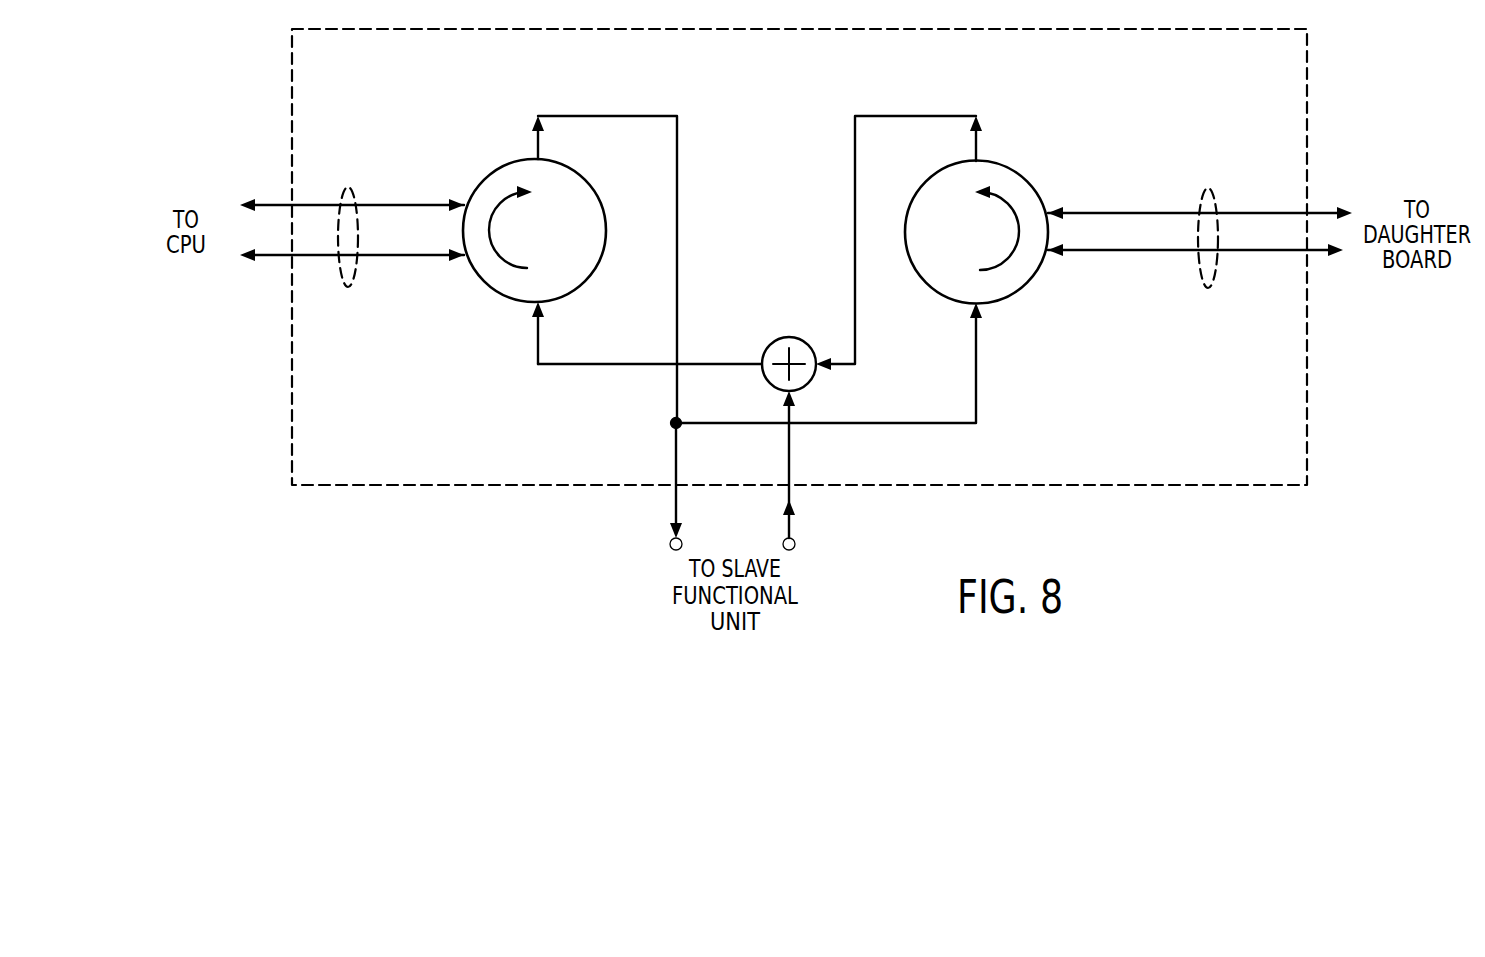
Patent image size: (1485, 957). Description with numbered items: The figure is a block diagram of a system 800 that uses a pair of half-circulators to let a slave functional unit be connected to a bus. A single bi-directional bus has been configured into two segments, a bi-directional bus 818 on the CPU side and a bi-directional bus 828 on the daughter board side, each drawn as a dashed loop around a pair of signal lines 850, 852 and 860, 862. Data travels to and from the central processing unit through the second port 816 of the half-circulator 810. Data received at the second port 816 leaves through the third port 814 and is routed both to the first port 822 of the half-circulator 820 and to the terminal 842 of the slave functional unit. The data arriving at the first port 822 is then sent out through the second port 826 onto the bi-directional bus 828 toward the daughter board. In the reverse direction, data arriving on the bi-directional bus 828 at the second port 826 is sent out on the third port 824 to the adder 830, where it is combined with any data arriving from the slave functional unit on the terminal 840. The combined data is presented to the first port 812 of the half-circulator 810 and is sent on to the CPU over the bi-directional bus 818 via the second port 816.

The bidirectional bus interface circuit 800 is at (444, 486).
The half-circulator 810 is at (487, 290).
The port 1 812 is at (545, 305).
The port 3 814 is at (541, 153).
The port 2 816 is at (490, 184).
The bi-directional bus 818 is at (348, 187).
The half-circulator 820 is at (1038, 190).
The port 1 822 is at (983, 306).
The port 3 824 is at (981, 160).
The port 2 826 is at (1052, 262).
The bi-directional bus 828 is at (1208, 188).
The adder 830 is at (801, 337).
The terminal 840 is at (796, 544).
The terminal 842 is at (670, 544).
The CPU bus signal line 850 is at (248, 193).
The CPU bus signal line 852 is at (240, 262).
The daughter board signal line 860 is at (1352, 200).
The daughter board signal line 862 is at (1342, 262).